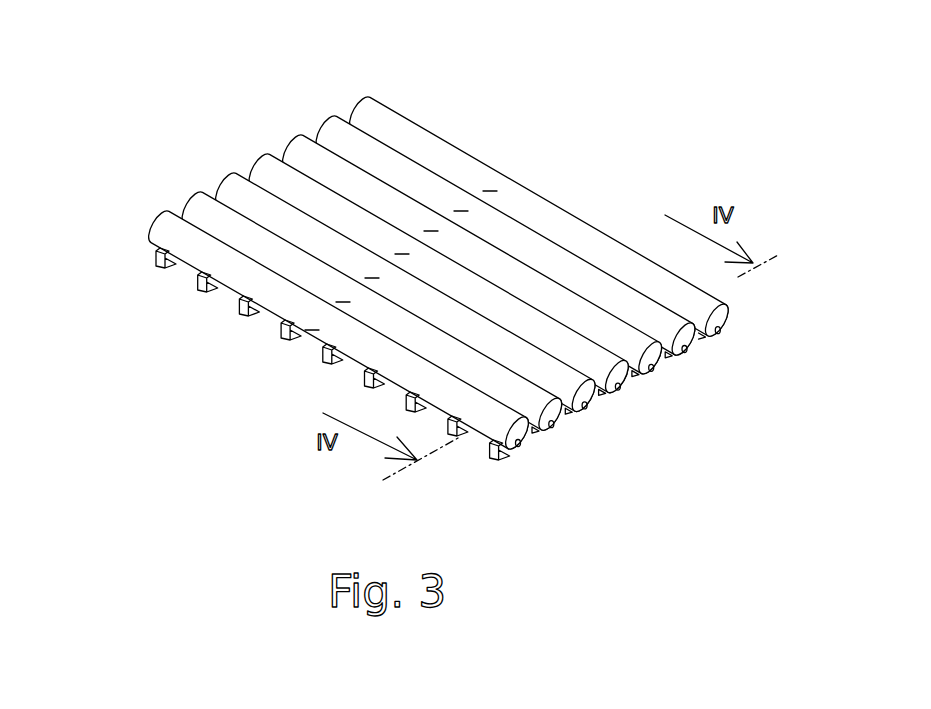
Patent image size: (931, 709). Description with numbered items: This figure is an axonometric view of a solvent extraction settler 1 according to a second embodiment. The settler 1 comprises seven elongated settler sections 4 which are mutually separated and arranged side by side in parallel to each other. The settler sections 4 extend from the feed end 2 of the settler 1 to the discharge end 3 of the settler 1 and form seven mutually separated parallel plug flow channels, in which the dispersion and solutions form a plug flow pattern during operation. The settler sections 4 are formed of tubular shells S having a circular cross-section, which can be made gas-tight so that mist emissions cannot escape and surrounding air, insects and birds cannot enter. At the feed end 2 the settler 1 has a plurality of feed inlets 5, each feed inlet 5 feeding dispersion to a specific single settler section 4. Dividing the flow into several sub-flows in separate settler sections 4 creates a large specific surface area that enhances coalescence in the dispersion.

The settler 1 is at (404, 285).
The feed end 2 is at (498, 483).
The discharge end 3 is at (118, 268).
The settler section 4 is at (192, 232).
The feed inlet 5 is at (521, 447).